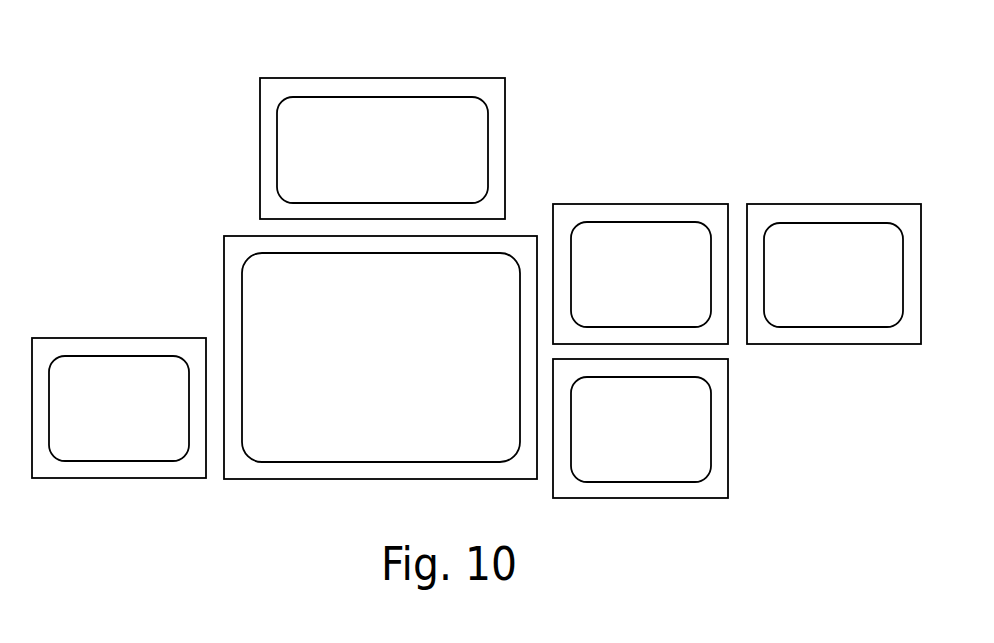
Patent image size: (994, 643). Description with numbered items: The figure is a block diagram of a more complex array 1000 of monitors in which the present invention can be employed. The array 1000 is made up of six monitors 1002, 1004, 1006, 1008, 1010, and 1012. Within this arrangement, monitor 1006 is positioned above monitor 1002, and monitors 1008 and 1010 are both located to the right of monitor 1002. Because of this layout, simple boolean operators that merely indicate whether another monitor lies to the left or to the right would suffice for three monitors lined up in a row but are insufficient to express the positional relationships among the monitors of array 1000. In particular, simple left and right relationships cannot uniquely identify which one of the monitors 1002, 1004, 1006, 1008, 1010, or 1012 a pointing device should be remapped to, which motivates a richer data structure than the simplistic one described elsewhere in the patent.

The array 1000 is at (729, 111).
The monitor 1002 is at (405, 368).
The monitor 1004 is at (144, 421).
The monitor 1006 is at (407, 162).
The monitor 1008 is at (667, 285).
The monitor 1010 is at (665, 440).
The monitor 1012 is at (858, 287).